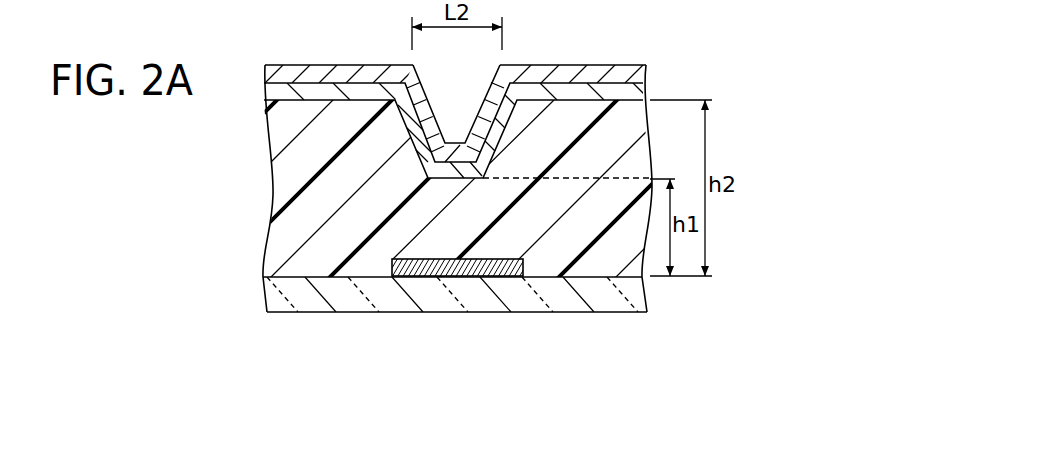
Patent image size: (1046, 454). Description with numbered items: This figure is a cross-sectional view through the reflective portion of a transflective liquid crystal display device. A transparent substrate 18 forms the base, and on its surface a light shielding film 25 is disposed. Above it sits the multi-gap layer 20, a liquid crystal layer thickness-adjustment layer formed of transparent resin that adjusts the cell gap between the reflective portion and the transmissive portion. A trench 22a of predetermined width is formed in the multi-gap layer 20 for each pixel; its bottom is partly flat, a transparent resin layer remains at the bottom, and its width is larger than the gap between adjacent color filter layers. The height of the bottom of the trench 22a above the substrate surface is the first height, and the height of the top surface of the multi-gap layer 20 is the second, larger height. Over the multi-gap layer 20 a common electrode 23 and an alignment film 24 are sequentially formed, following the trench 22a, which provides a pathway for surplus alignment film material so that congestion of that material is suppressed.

The transparent substrate 18 is at (632, 291).
The multi-gap layer 20 is at (288, 184).
The trench 22a is at (458, 134).
The common electrode 23 is at (647, 92).
The alignment film 24 is at (647, 72).
The light shielding film 25 is at (467, 262).